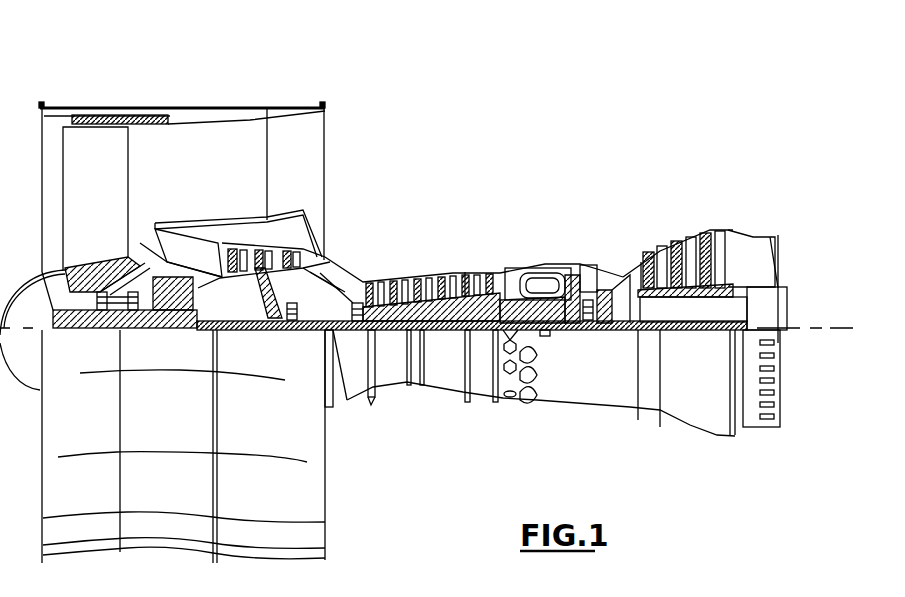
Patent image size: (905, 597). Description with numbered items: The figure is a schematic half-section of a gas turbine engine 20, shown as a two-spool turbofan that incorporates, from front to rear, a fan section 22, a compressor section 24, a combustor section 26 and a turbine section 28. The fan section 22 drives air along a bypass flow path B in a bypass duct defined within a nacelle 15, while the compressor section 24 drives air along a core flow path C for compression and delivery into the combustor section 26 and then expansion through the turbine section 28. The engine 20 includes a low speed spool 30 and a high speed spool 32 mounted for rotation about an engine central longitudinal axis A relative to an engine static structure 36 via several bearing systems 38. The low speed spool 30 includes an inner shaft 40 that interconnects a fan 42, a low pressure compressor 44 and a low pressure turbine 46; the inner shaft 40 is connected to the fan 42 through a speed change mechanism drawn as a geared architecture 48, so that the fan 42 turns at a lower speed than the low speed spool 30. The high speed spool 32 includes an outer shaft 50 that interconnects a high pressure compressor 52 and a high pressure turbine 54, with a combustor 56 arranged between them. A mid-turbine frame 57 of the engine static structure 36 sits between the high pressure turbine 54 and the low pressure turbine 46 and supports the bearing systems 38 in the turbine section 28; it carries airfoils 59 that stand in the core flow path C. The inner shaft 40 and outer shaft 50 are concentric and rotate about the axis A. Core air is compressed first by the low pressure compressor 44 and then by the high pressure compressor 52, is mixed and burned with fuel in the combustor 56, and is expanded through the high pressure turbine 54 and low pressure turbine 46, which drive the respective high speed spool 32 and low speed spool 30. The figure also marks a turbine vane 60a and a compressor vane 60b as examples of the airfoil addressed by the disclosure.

The nacelle 15 is at (183, 108).
The gas turbine engine 20 is at (543, 146).
The fan section 22 is at (127, 100).
The compressor section 24 is at (358, 250).
The combustor section 26 is at (540, 252).
The turbine section 28 is at (654, 218).
The low speed spool 30 is at (446, 333).
The high speed spool 32 is at (487, 290).
The engine static structure 36 is at (480, 333).
The bearing systems 38 is at (290, 330).
The inner shaft 40 is at (343, 336).
The fan 42 is at (113, 208).
The low pressure compressor 44 is at (270, 254).
The low pressure turbine 46 is at (690, 230).
The geared architecture 48 is at (183, 330).
The outer shaft 50 is at (548, 333).
The high pressure compressor 52 is at (423, 292).
The high pressure turbine 54 is at (623, 258).
The combustor 56 is at (541, 285).
The mid-turbine frame 57 is at (637, 285).
The airfoils 59 is at (650, 303).
The turbine vane 60a is at (641, 262).
The compressor vane 60b is at (465, 272).
The engine central longitudinal axis A is at (853, 328).
The bypass flow path B is at (158, 165).
The core flow path C is at (188, 250).